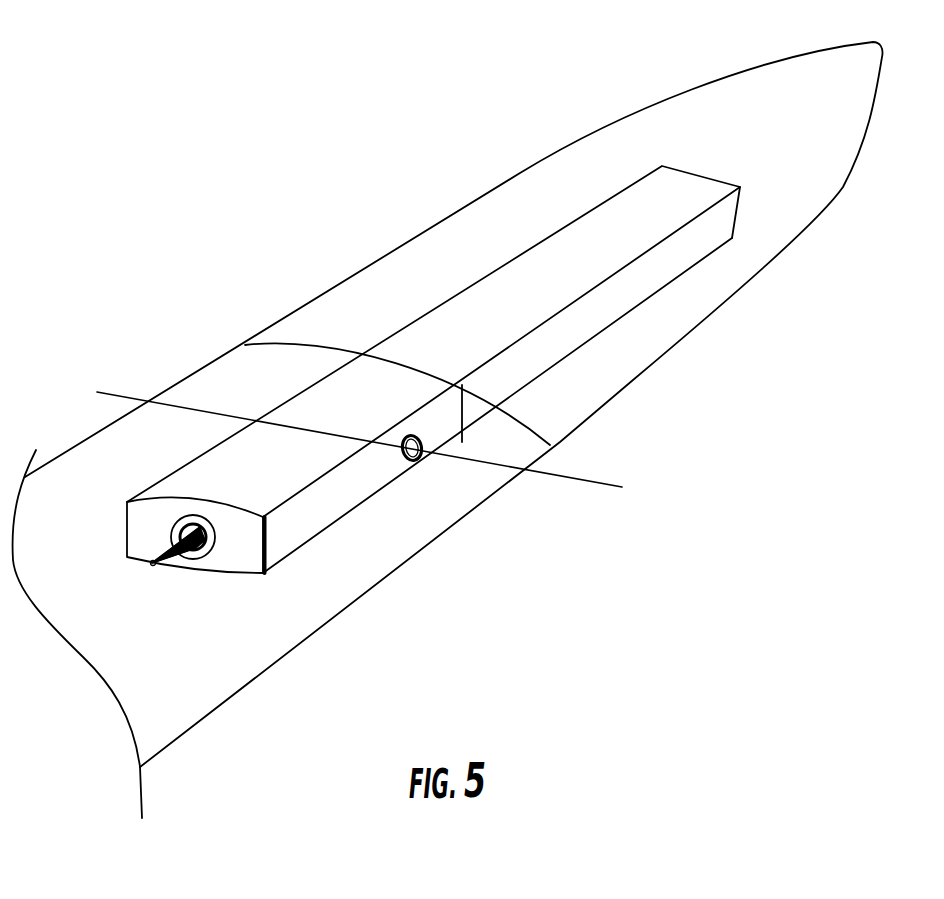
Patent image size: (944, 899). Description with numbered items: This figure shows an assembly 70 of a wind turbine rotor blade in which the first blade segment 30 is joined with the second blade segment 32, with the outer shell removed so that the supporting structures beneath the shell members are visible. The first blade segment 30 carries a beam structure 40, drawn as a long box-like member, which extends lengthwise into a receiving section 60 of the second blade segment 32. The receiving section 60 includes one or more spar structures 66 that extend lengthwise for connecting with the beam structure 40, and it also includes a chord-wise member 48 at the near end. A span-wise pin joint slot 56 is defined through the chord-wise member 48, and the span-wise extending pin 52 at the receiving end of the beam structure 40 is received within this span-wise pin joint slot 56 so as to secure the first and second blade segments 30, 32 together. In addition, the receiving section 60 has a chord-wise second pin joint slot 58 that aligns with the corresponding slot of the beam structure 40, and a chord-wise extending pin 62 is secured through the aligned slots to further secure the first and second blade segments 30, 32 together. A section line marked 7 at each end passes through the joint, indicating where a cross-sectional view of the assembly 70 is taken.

The section line 7- 7 is at (97, 392).
The first blade segment 30 is at (648, 112).
The second blade segment 32 is at (78, 463).
The beam structure 40 is at (484, 269).
The chord-wise member 48 is at (157, 520).
The span-wise extending pin 52 is at (162, 568).
The span-wise pin joint slot 56 is at (197, 518).
The second pin joint slot 58 is at (405, 460).
The receiving section 60 is at (333, 514).
The chord-wise extending pin 62 is at (424, 453).
The spar structures 66 is at (267, 410).
The assembly 70 is at (155, 189).